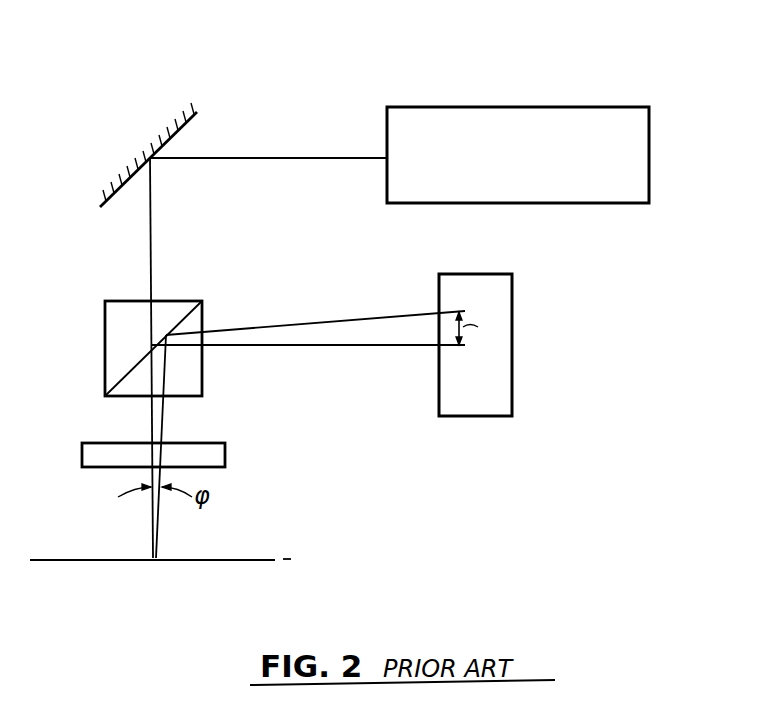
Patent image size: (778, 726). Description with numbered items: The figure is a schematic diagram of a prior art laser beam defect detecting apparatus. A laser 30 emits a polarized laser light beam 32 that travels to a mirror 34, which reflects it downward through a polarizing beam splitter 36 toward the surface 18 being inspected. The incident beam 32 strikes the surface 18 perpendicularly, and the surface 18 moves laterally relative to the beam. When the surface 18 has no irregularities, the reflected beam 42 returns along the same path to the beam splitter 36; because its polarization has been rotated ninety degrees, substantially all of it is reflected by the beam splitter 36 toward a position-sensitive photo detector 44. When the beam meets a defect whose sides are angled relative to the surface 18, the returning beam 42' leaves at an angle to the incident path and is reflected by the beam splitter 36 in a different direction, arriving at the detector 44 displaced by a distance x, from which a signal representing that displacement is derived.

The surface 18 is at (247, 558).
The laser 30 is at (532, 107).
The laser light beam 32 is at (298, 157).
The mirror 34 is at (110, 200).
The polarizing beam splitter 36 is at (103, 318).
The reflected beam 42 is at (308, 375).
The reflected beam from defect 42' is at (315, 307).
The position-sensitive photo detector 44 is at (512, 362).